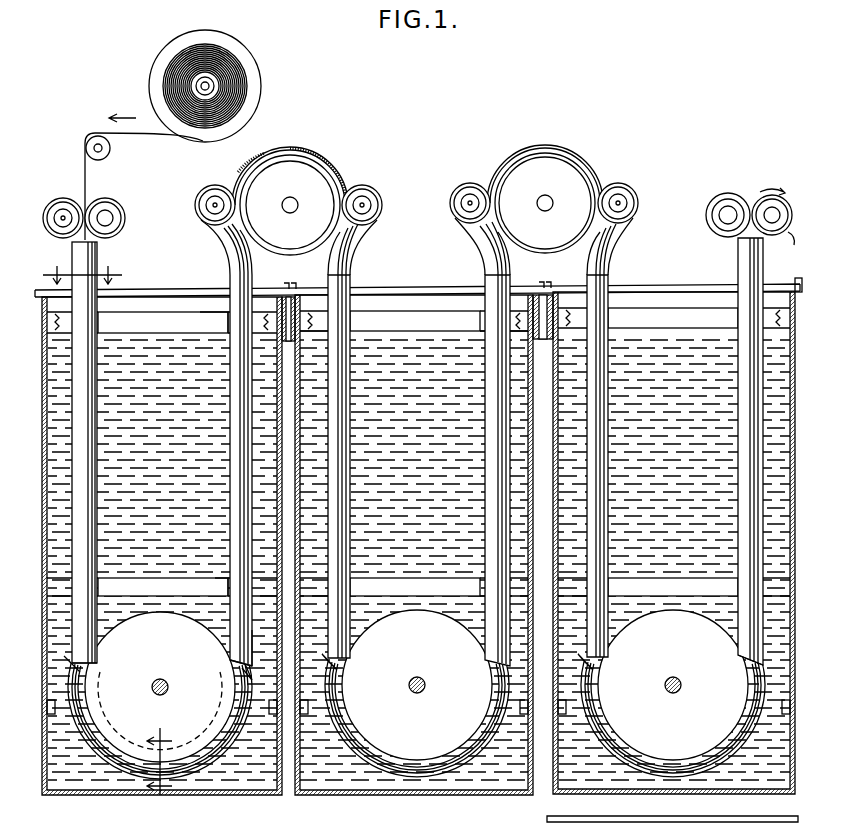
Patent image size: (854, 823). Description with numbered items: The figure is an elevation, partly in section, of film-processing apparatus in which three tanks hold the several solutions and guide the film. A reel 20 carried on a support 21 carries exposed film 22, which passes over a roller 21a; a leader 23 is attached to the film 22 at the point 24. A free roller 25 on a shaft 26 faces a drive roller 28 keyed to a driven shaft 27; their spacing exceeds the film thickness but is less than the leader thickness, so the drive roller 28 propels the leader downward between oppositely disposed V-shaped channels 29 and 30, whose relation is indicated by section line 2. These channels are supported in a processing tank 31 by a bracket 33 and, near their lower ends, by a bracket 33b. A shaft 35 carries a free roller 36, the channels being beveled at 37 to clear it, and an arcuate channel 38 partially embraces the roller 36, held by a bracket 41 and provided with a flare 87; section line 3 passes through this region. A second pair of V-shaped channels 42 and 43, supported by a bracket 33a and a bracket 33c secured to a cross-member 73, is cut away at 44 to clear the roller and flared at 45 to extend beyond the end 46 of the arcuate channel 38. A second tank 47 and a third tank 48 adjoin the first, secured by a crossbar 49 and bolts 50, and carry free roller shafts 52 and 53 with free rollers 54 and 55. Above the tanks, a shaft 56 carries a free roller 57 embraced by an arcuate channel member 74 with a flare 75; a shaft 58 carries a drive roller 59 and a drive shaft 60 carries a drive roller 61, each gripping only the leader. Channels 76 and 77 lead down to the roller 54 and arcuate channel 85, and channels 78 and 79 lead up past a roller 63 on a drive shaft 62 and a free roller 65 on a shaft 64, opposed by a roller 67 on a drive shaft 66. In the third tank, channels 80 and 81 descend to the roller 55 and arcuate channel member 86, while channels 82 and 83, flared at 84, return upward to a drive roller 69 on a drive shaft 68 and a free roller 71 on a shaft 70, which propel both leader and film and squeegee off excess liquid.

The section line 2- 2 is at (82, 264).
The section line 3- 3 is at (167, 761).
The reel 20 is at (262, 96).
The support 21 is at (214, 84).
The roller 21a is at (106, 156).
The exposed film 22 is at (152, 134).
The leader 23 is at (89, 422).
The point 24 is at (72, 202).
The free roller 25 is at (117, 212).
The shaft 26 is at (118, 226).
The driven shaft 27 is at (58, 224).
The drive roller 28 is at (51, 208).
The V-shaped channel 29 is at (92, 303).
The V-shaped channel 30 is at (92, 440).
The processing tank 31 is at (228, 790).
The bracket 33 is at (100, 322).
The bracket 33a is at (228, 312).
The bracket 33b is at (103, 580).
The bracket 33c is at (223, 585).
The shaft 35 is at (167, 687).
The free roller 36 is at (160, 687).
The bevel 37 is at (97, 645).
The arcuate channel 38 is at (105, 757).
The bracket 41 is at (57, 714).
The V-shaped channel 42 is at (235, 460).
The V-shaped channel 43 is at (230, 392).
The cut-away 44 is at (230, 658).
The flare 45 is at (256, 662).
The end 46 is at (250, 678).
The second tank 47 is at (328, 790).
The third tank 48 is at (575, 790).
The crossbar 49 is at (385, 288).
The bolt 50 is at (290, 287).
The free roller shaft 52 is at (421, 690).
The free roller shaft 53 is at (676, 690).
The free roller 54 is at (417, 685).
The free roller 55 is at (673, 685).
The shaft 56 is at (338, 182).
The free roller 57 is at (292, 205).
The shaft 58 is at (213, 197).
The drive roller 59 is at (200, 198).
The drive shaft 60 is at (373, 200).
The drive roller 61 is at (380, 206).
The drive shaft 62 is at (466, 210).
The roller 63 is at (463, 190).
The shaft 64 is at (548, 200).
The free roller 65 is at (542, 172).
The drive shaft 66 is at (626, 195).
The roller 67 is at (630, 205).
The drive shaft 68 is at (725, 216).
The drive roller 69 is at (726, 196).
The shaft 70 is at (775, 208).
The free roller 71 is at (788, 230).
The cross-member 73 is at (172, 312).
The arcuate channel member 74 is at (296, 152).
The flare 75 is at (237, 172).
The V-shaped channel 76 is at (350, 297).
The V-shaped channel 77 is at (345, 300).
The V-shaped channel 78 is at (486, 275).
The V-shaped channel 79 is at (493, 300).
The V-shaped channel 80 is at (600, 272).
The V-shaped channel 81 is at (603, 287).
The channel 82 is at (739, 270).
The channel 83 is at (748, 299).
The flare 84 is at (758, 662).
The arcuate channel 85 is at (418, 778).
The arcuate channel member 86 is at (676, 778).
The flare 87 is at (68, 676).